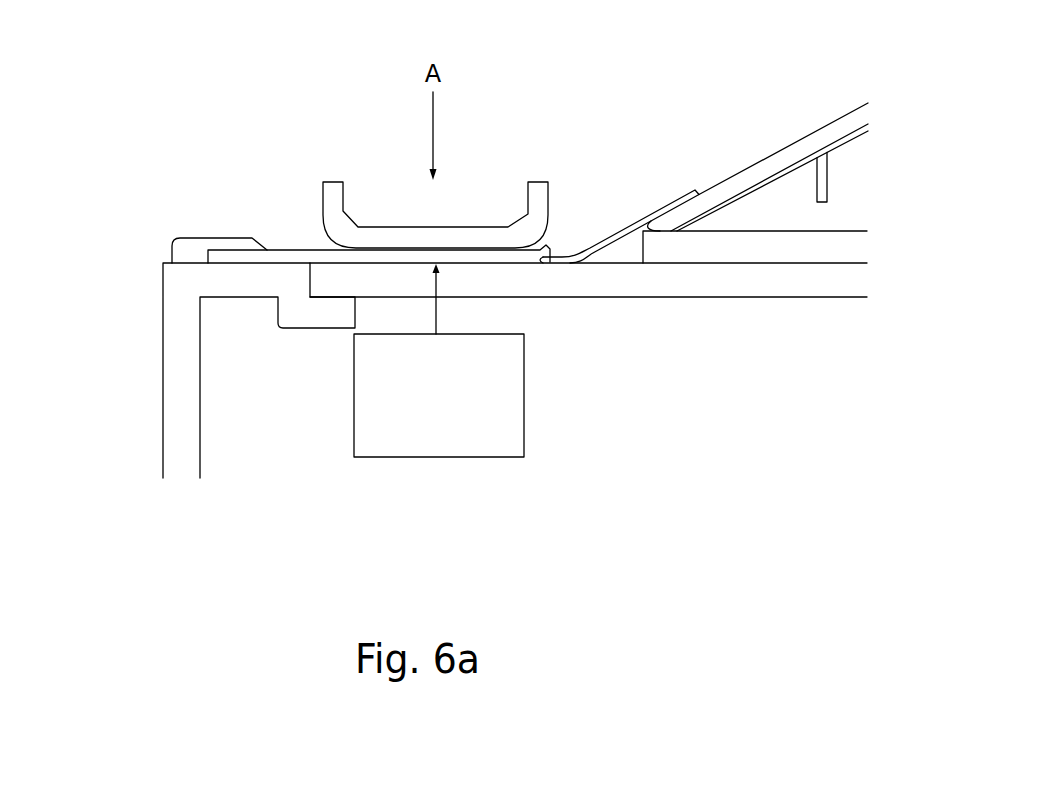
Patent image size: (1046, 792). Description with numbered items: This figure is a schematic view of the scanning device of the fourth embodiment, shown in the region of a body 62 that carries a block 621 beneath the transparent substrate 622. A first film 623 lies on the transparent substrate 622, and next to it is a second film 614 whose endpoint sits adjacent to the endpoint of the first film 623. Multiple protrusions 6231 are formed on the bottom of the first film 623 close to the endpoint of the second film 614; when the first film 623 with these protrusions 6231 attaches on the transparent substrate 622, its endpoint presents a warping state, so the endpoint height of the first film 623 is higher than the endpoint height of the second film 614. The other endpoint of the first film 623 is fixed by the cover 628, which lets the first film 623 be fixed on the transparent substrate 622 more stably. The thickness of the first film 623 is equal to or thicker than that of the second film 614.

The seat / holder body 62 is at (148, 378).
The driving unit 621 is at (439, 360).
The transparent substrate 622 is at (720, 282).
The first film 623 is at (305, 252).
The protrusion 6231 is at (557, 258).
The cover 628 is at (197, 255).
The second film 614 is at (608, 235).